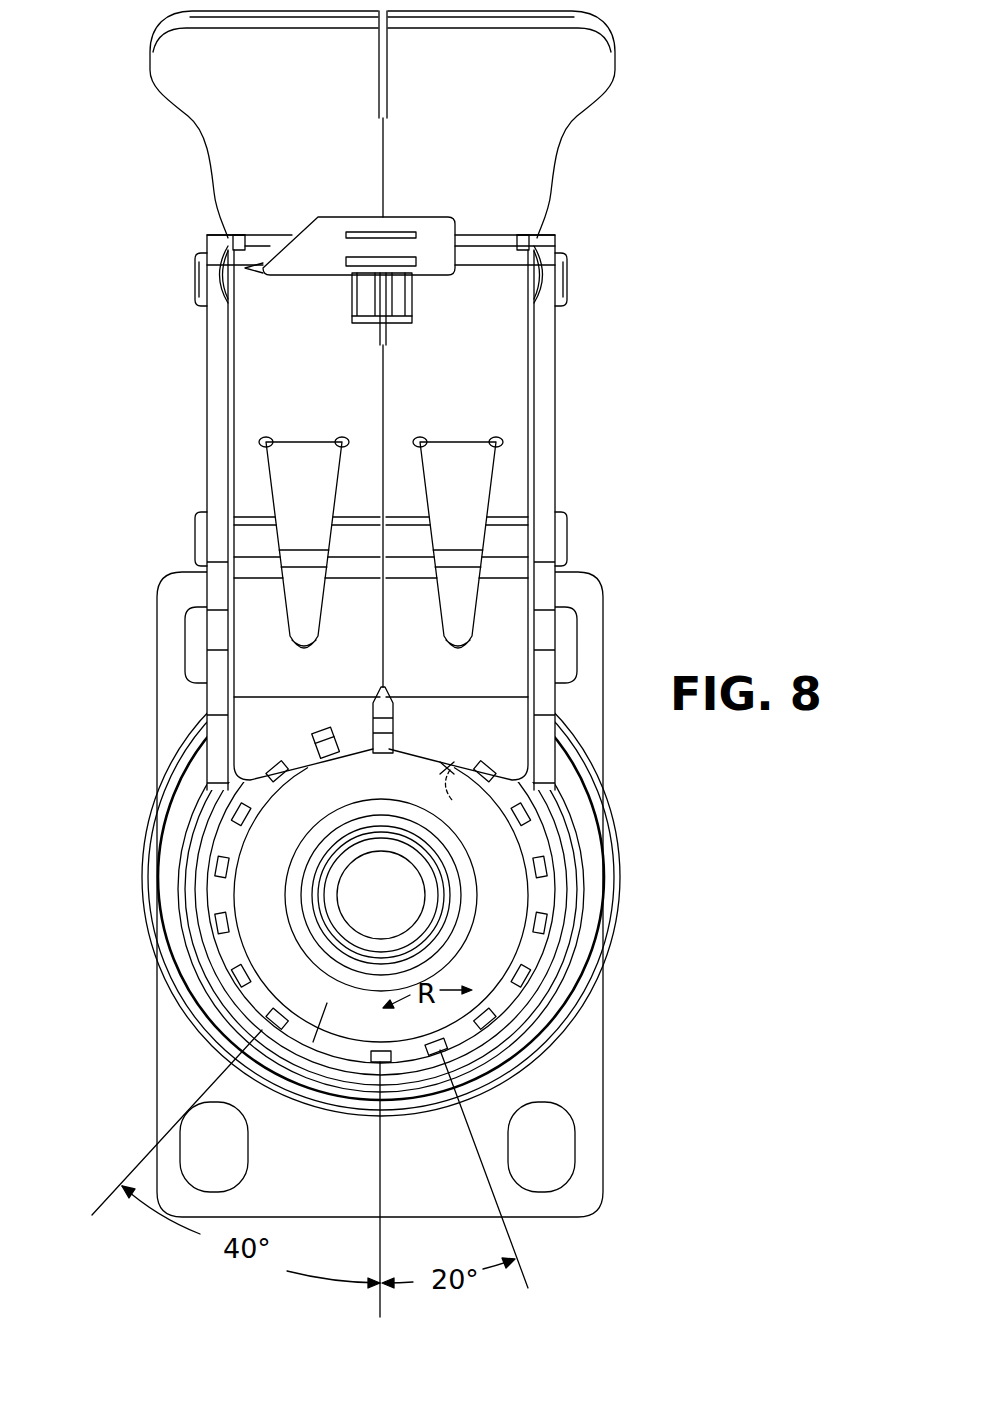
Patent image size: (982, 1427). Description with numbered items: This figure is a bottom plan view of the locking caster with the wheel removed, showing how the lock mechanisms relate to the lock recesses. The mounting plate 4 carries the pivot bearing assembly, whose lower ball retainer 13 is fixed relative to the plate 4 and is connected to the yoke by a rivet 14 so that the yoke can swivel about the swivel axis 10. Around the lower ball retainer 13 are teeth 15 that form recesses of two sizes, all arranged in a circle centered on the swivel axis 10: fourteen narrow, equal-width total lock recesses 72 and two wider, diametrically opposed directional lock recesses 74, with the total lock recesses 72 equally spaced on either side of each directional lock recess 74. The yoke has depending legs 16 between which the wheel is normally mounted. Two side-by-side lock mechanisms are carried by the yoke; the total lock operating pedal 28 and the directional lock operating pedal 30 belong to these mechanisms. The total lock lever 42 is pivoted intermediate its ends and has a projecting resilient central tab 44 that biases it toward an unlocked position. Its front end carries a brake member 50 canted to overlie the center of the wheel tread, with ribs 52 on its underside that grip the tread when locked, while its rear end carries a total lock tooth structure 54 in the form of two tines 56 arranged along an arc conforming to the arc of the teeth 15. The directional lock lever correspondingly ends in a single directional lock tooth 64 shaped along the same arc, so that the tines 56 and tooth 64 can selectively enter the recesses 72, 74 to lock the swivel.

The plate 4 is at (173, 707).
The swivel axis 10 is at (383, 872).
The lower ball retainer 13 is at (240, 902).
The rivet 14 is at (391, 935).
The teeth 15 is at (235, 862).
The legs 16 is at (207, 397).
The total lock operating pedal 28 is at (213, 125).
The directional lock operating pedal 30 is at (558, 135).
The total lock lever 42 is at (240, 488).
The central tab 44 is at (305, 460).
The brake member 50 is at (330, 235).
The ribs 52 is at (512, 488).
The total lock tooth structure 54 is at (457, 457).
The tines 56 is at (357, 748).
The directional lock tooth 64 is at (443, 771).
The total lock recesses 72 is at (250, 798).
The directional lock recesses 74 is at (401, 906).